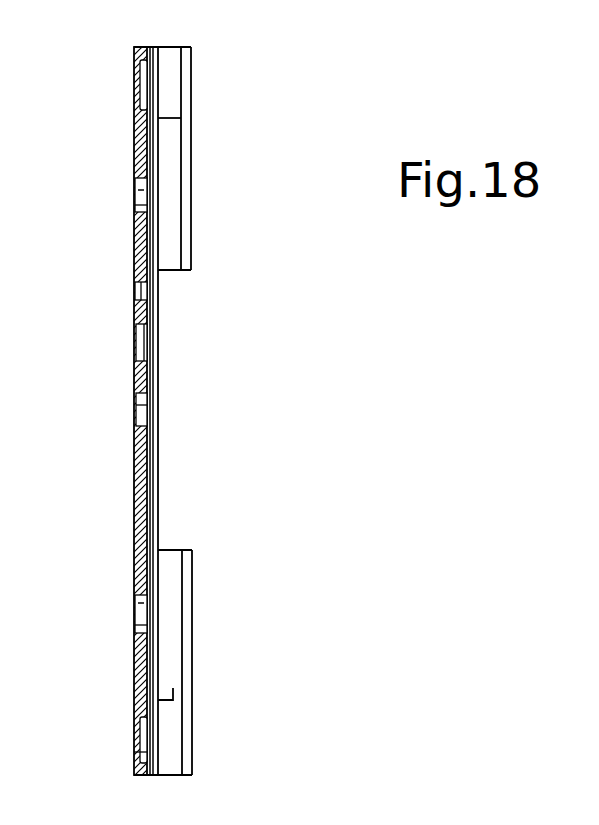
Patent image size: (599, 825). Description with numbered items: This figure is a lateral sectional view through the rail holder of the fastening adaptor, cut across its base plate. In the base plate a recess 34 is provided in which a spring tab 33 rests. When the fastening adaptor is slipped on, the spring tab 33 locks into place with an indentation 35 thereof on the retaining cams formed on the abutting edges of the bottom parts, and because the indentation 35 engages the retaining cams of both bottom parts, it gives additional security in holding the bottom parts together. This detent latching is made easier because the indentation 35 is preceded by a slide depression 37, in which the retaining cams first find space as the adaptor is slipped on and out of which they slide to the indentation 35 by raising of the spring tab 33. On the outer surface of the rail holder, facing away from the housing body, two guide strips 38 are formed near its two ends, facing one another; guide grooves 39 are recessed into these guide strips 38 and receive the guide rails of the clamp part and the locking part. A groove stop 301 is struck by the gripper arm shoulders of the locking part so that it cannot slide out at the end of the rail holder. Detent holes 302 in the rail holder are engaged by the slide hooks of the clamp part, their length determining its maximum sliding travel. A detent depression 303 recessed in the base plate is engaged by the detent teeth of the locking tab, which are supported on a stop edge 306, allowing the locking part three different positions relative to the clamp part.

The spring tab 33 is at (137, 507).
The recess 34 is at (137, 290).
The indentation 35 is at (137, 417).
The slide depression 37 is at (137, 340).
The guide strips 38 is at (187, 132).
The guide grooves 39 is at (167, 203).
The groove stop 301 is at (173, 688).
The detent holes 302 is at (141, 613).
The detent depression 303 is at (142, 741).
The stop edge 306 is at (138, 758).